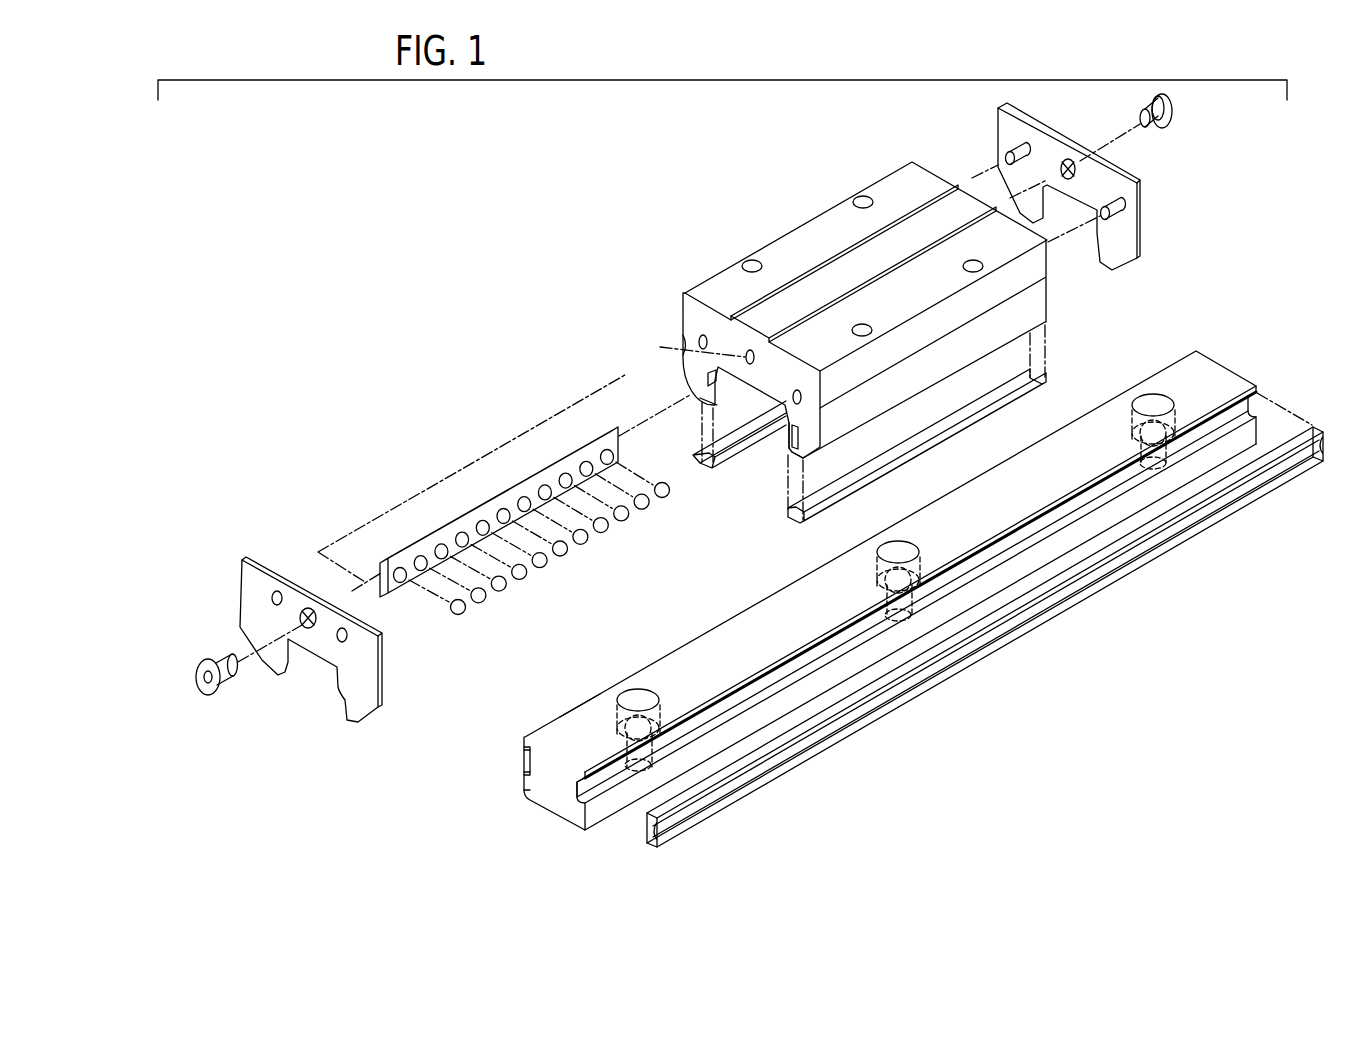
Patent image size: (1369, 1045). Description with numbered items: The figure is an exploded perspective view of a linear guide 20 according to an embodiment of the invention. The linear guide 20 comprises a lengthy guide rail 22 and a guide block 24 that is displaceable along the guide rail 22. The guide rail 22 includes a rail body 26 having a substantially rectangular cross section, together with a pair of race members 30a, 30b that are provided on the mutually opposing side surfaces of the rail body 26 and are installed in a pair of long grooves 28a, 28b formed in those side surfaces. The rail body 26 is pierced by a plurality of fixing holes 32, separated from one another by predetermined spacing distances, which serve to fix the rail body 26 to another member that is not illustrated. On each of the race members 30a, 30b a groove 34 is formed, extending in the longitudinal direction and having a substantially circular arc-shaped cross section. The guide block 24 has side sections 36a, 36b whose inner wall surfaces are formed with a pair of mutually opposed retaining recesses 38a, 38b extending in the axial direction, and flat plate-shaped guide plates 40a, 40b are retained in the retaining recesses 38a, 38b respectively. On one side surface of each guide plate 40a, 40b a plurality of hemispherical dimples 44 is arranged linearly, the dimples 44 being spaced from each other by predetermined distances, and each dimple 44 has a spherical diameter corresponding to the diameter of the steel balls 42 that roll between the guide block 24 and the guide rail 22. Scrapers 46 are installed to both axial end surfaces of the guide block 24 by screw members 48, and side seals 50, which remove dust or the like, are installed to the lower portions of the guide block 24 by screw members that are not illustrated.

The linear guide 20 is at (463, 357).
The guide rail 22 is at (896, 595).
The guide block 24 is at (833, 352).
The rail body 26 is at (725, 637).
The long groove 28a is at (522, 771).
The long groove 28b is at (578, 794).
The race member 30a is at (522, 745).
The race member 30b is at (648, 846).
The fixing hole 32 is at (630, 698).
The groove 34 is at (521, 758).
The side section 36a is at (688, 362).
The side section 36b is at (808, 430).
The retaining recess 38a is at (690, 383).
The retaining recess 38b is at (796, 456).
The guide plate 40a is at (585, 447).
The guide plate 40b is at (790, 436).
The ball 42 is at (627, 522).
The hemispherical dimple 44 is at (567, 472).
The scraper 46 is at (243, 558).
The screw member 48 is at (223, 657).
The side seal 50 is at (733, 440).